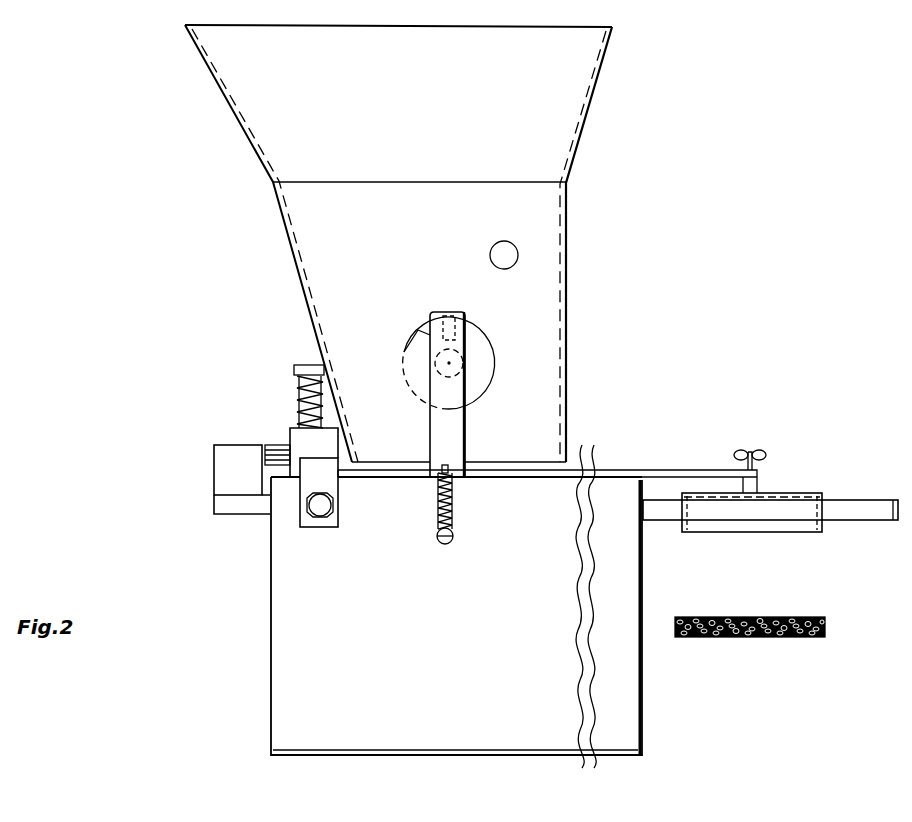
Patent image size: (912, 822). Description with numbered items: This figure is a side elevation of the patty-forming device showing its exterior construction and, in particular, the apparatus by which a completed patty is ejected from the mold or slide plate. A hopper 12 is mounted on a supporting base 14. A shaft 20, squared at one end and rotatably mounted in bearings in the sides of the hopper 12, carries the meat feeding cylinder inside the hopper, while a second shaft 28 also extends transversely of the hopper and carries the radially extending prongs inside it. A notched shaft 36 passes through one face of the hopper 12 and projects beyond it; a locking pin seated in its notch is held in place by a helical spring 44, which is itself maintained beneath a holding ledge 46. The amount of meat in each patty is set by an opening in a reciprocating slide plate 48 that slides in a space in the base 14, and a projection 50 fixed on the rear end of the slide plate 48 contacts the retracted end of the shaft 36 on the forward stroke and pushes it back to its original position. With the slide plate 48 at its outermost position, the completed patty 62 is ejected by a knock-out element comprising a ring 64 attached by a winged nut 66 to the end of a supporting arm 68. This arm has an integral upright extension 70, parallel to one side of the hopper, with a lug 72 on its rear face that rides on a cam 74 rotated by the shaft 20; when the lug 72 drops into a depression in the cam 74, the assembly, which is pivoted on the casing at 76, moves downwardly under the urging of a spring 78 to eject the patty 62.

The hopper 12 is at (548, 325).
The supporting base 14 is at (292, 610).
The shaft 20 is at (467, 363).
The shaft 28 is at (505, 251).
The shaft 36 is at (280, 443).
The helical spring 44 is at (297, 395).
The holding ledge 46 is at (306, 367).
The slide plate 48 is at (224, 510).
The projection 50 is at (229, 452).
The patty 62 is at (787, 640).
The ring 64 is at (714, 528).
The winged nut 66 is at (747, 449).
The supporting arm 68 is at (652, 465).
The upright extension 70 is at (450, 433).
The lug 72 is at (445, 315).
The cam 74 is at (408, 365).
The pivot 76 is at (322, 507).
The spring 78 is at (455, 505).